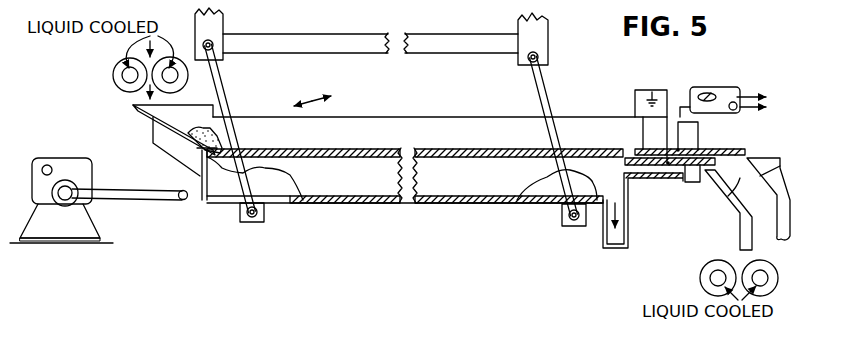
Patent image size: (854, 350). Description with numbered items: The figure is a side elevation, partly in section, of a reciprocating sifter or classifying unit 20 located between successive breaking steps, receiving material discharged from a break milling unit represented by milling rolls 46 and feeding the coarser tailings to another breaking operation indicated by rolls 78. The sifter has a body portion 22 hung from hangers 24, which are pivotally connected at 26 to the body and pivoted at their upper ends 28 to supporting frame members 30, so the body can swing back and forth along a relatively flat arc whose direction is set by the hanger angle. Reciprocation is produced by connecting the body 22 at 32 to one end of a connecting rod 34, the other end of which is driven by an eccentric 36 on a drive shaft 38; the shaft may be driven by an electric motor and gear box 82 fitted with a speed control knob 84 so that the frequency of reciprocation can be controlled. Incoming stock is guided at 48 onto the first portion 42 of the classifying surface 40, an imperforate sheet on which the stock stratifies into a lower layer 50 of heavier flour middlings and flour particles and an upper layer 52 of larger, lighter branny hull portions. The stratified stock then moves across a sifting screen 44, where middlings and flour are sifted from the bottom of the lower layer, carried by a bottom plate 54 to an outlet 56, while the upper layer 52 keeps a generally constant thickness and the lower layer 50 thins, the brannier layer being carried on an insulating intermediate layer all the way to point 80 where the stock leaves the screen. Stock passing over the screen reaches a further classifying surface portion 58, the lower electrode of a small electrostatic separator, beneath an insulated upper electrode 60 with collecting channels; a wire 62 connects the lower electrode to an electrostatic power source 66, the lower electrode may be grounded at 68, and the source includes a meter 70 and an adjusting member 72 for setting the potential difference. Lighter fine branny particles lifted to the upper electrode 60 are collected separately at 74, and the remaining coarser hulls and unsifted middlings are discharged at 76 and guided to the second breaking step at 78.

The reciprocating sifter 20 is at (298, 232).
The body portion 22 is at (218, 190).
The hangers 24 is at (553, 114).
The pivotal connection 26 is at (254, 218).
The upper ends of hangers 28 is at (214, 49).
The supporting frame members 30 is at (212, 26).
The connection point 32 is at (182, 201).
The connecting rod 34 is at (120, 197).
The eccentric 36 is at (60, 201).
The drive shaft 38 is at (80, 201).
The classifying surface 40 is at (350, 160).
The first portion of classifying surface 42 is at (288, 177).
The sifting screen 44 is at (452, 160).
The milling rolls 46 is at (116, 69).
The guide 48 is at (167, 146).
The lower layer 50 is at (337, 158).
The upper layer 52 is at (352, 150).
The bottom plate 54 is at (432, 204).
The outlet 56 is at (608, 249).
The further classifying surface portion 58 is at (688, 178).
The upper electrode 60 is at (642, 149).
The wire 62 is at (667, 91).
The electrostatic power source 66 is at (727, 115).
The ground 68 is at (651, 92).
The meter 70 is at (694, 95).
The adjusting member 72 is at (737, 100).
The collection point 74 is at (780, 202).
The discharge point 76 is at (742, 228).
The rolls 78 is at (724, 258).
The point of leaving screen 80 is at (621, 150).
The electric motor and gear box 82 is at (79, 168).
The speed control knob 84 is at (48, 165).